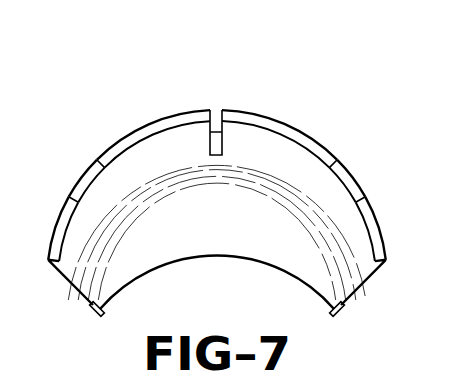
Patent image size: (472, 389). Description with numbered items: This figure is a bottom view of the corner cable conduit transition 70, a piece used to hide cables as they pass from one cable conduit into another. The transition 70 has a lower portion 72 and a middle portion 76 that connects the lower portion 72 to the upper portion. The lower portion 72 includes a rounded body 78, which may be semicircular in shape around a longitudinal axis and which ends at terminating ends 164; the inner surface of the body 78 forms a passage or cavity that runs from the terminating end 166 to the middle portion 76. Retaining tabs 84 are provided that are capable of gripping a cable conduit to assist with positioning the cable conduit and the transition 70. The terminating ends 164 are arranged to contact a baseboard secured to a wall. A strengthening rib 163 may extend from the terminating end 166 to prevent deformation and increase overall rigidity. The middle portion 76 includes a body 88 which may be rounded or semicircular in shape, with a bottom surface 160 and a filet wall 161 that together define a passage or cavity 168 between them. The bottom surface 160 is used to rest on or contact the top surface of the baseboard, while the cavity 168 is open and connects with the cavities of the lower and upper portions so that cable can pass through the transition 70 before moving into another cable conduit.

The corner cable conduit transition 70 is at (243, 187).
The lower portion 72 is at (125, 152).
The rounded body 78 is at (181, 105).
The middle portion 76 is at (402, 299).
The body 88 is at (395, 244).
The retaining tabs 84 is at (99, 315).
The bottom surface 160 is at (56, 226).
The filet wall 161 is at (76, 184).
The strengthening rib 163 is at (209, 153).
The terminating ends 164 is at (98, 160).
The terminating end 166 is at (249, 112).
The cavity 168 is at (254, 228).